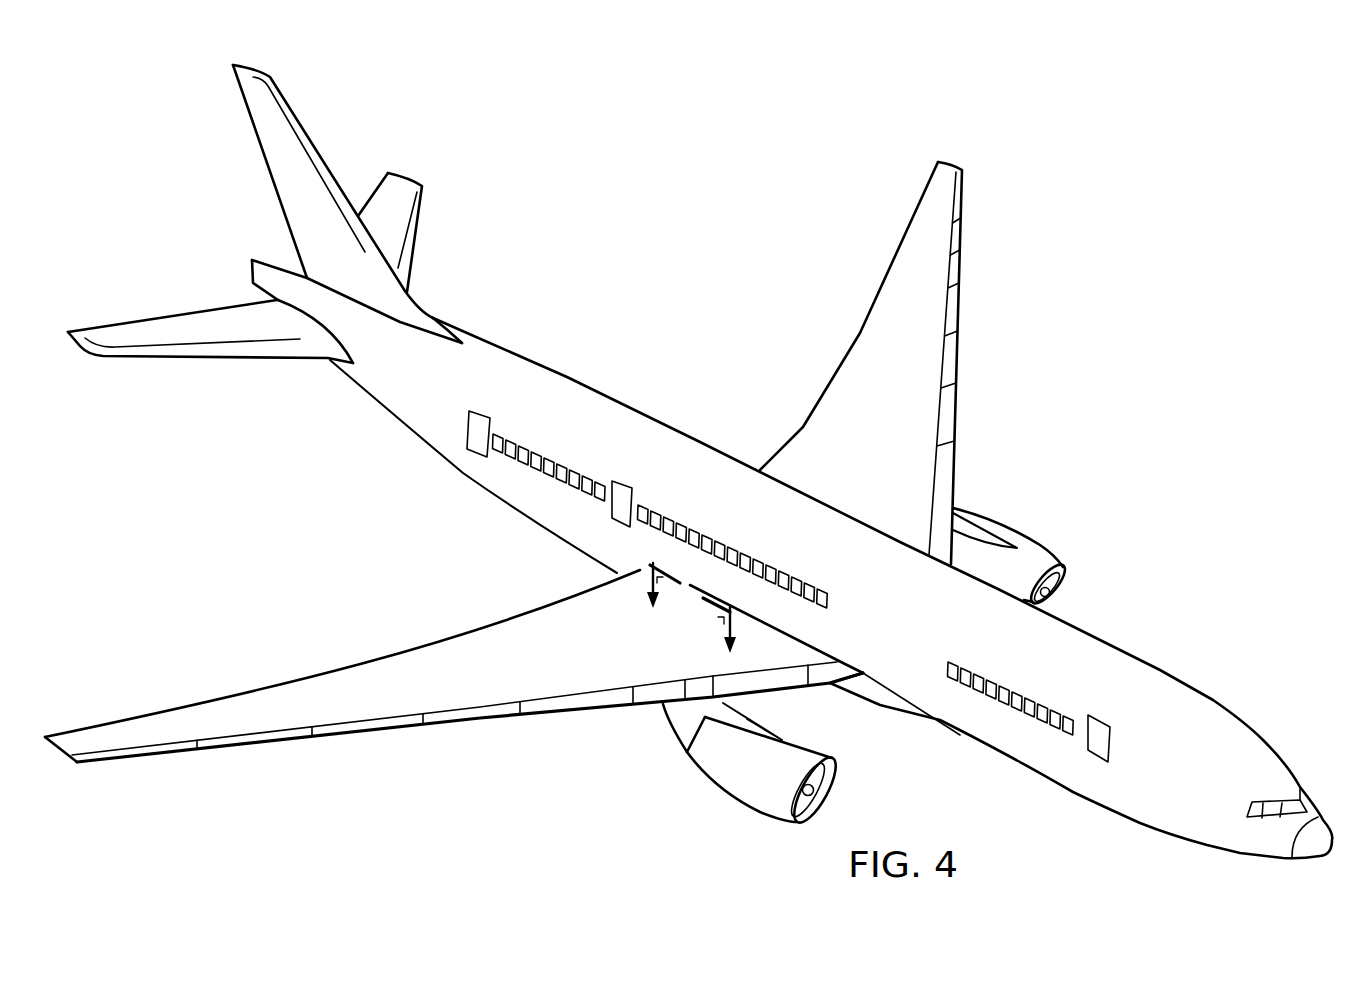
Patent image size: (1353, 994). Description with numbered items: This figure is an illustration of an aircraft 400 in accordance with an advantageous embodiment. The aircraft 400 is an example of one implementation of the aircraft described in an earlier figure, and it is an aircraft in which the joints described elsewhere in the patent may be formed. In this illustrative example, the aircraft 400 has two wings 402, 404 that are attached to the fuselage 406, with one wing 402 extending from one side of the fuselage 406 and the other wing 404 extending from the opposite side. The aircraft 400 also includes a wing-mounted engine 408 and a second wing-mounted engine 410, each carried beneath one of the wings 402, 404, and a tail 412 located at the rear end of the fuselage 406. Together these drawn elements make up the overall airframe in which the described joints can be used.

The aircraft 400 is at (535, 136).
The wing 402 is at (858, 338).
The wing 404 is at (356, 671).
The fuselage 406 is at (1110, 649).
The wing-mounted engine 408 is at (1030, 543).
The wing-mounted engine 410 is at (732, 797).
The tail 412 is at (278, 190).